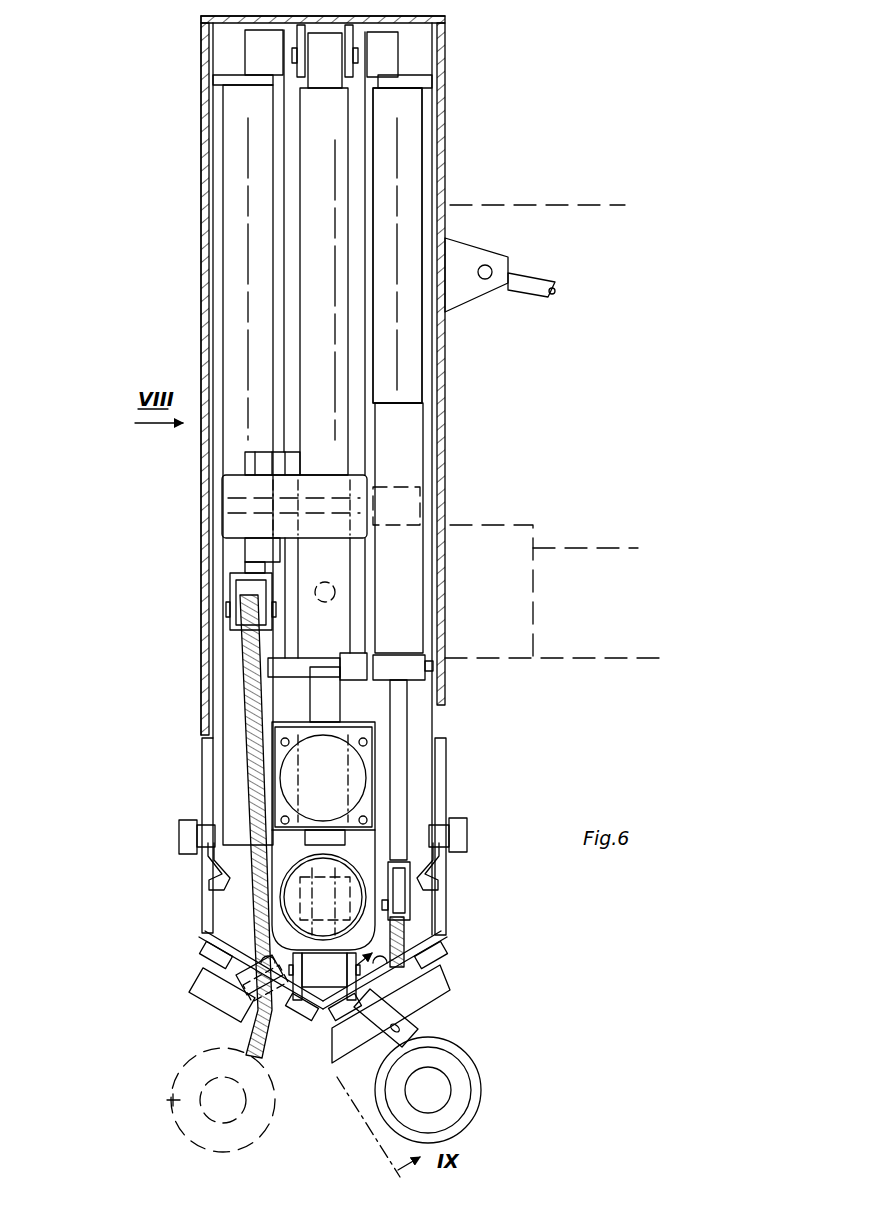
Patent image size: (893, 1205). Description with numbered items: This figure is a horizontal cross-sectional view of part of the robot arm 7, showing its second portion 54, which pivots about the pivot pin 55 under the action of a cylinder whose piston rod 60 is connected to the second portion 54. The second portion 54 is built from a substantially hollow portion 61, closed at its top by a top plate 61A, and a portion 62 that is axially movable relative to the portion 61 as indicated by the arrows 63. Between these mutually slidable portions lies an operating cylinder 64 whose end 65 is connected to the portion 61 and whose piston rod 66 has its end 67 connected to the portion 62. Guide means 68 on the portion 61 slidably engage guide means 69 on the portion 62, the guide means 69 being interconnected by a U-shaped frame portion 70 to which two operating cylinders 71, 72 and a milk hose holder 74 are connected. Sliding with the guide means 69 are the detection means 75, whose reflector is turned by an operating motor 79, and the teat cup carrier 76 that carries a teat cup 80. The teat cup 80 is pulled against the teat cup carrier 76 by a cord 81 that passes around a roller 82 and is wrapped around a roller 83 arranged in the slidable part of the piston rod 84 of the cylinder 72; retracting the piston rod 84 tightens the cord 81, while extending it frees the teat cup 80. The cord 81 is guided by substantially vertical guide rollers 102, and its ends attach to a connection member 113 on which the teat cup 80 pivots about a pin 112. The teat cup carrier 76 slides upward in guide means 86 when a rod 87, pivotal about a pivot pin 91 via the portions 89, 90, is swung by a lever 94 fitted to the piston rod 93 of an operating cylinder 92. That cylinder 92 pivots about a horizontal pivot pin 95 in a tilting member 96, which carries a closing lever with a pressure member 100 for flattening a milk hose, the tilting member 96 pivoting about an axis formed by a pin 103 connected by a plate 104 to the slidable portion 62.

The robot arm 7 is at (525, 512).
The second portion 54 is at (445, 180).
The pivot pin 55 is at (337, 592).
The piston rod 60 is at (535, 285).
The portion 61 is at (190, 200).
The top plate 61A is at (232, 23).
The portion 62 is at (190, 785).
The arrows 63 is at (495, 708).
The operating cylinder 64 is at (313, 363).
The end 65 is at (332, 80).
The piston rod 66 is at (327, 863).
The end 67 is at (330, 973).
The guide means 68 is at (218, 107).
The guide means 69 is at (258, 48).
The U-shaped frame portion 70 is at (290, 463).
The operating cylinder 71 is at (423, 362).
The operating cylinder 72 is at (237, 262).
The milk hose holder 74 is at (245, 460).
The detection means 75 is at (290, 902).
The teat cup carrier 76 is at (203, 975).
The operating motor 79 is at (415, 772).
The teat cup 80 is at (167, 1102).
The cord 81 is at (240, 712).
The roller 82 is at (232, 600).
The roller 83 is at (195, 993).
The piston rod 84 is at (245, 565).
The guide means 86 is at (200, 947).
The rod 87 is at (395, 925).
The portion 89 is at (405, 905).
The portion 90 is at (435, 890).
The pivot pin 91 is at (182, 832).
The operating cylinder 92 is at (413, 430).
The piston rod 93 is at (418, 723).
The lever 94 is at (215, 872).
The horizontal pivot pin 95 is at (440, 662).
The tilting member 96 is at (440, 645).
The pressure member 100 is at (462, 500).
The guide rollers 102 is at (227, 1008).
The pin 103 is at (270, 667).
The plate 104 is at (327, 703).
The pin 112 is at (400, 1030).
The connection member 113 is at (410, 1010).